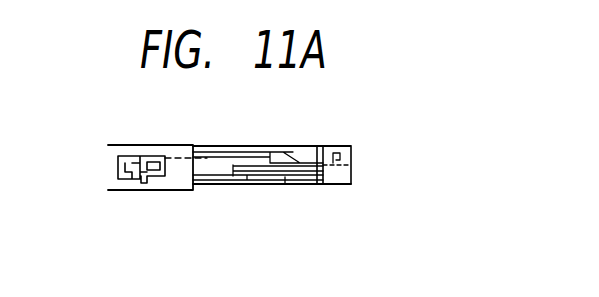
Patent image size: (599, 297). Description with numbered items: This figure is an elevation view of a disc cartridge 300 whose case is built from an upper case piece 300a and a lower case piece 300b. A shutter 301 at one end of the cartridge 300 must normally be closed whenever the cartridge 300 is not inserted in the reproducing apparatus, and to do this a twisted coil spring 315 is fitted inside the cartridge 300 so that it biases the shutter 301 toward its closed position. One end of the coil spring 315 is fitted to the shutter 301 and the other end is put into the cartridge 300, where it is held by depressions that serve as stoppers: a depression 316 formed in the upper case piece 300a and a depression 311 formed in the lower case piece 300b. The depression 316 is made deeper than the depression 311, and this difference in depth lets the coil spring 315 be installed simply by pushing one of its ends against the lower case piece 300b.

The shutter 301 is at (150, 145).
The cartridge 300 is at (255, 122).
The depression 316 is at (307, 152).
The depression 311 is at (305, 179).
The twisted coil spring 315 is at (250, 176).
The upper case piece 300a is at (352, 155).
The lower case piece 300b is at (352, 176).